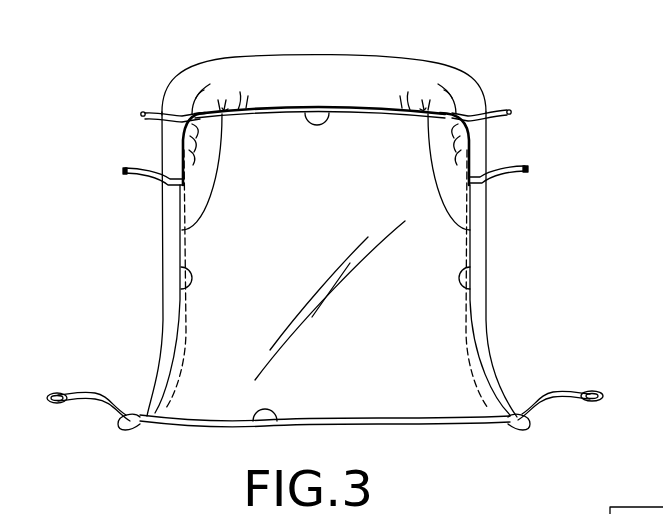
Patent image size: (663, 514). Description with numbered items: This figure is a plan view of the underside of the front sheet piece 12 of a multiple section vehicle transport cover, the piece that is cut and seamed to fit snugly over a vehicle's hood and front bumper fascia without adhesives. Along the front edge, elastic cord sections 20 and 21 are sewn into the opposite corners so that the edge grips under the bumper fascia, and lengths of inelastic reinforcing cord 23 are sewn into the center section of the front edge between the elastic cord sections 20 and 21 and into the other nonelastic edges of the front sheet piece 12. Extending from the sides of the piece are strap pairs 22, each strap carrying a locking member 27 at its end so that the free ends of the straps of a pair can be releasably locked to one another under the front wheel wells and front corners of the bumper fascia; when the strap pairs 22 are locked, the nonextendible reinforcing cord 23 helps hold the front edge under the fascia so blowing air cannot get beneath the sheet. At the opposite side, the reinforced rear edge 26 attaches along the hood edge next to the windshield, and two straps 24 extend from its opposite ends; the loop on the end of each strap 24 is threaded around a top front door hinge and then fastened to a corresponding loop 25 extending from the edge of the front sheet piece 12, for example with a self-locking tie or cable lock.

The front sheet piece 12 is at (343, 352).
The elastic cord section 20 is at (198, 208).
The elastic cord section 21 is at (458, 222).
The strap pair 22 is at (147, 120).
The inelastic reinforcing cord 23 is at (305, 108).
The strap 24 is at (97, 394).
The loop 25 is at (122, 431).
The rear edge 26 is at (372, 425).
The locking member 27 is at (143, 110).